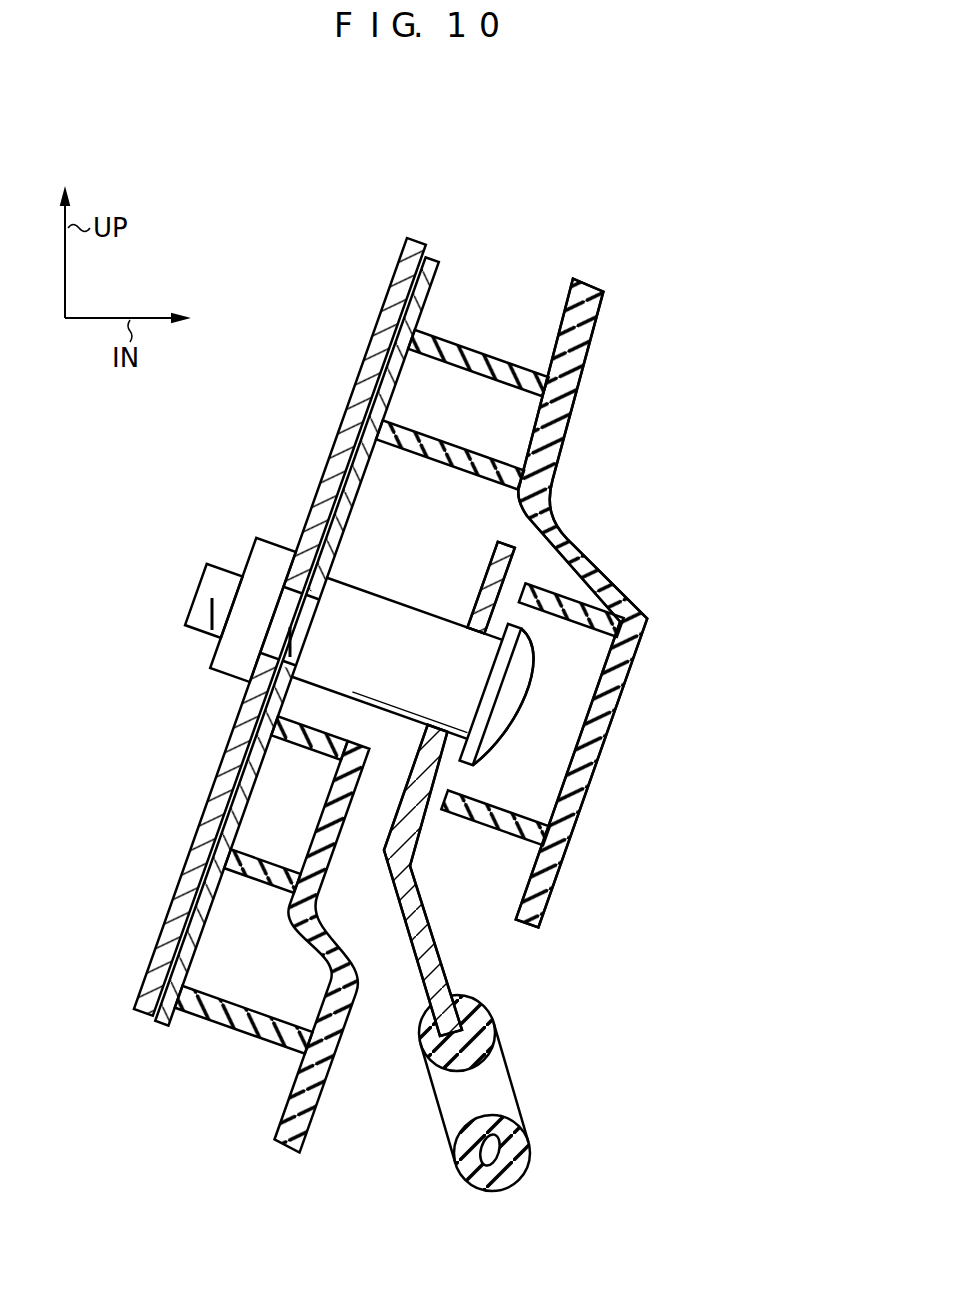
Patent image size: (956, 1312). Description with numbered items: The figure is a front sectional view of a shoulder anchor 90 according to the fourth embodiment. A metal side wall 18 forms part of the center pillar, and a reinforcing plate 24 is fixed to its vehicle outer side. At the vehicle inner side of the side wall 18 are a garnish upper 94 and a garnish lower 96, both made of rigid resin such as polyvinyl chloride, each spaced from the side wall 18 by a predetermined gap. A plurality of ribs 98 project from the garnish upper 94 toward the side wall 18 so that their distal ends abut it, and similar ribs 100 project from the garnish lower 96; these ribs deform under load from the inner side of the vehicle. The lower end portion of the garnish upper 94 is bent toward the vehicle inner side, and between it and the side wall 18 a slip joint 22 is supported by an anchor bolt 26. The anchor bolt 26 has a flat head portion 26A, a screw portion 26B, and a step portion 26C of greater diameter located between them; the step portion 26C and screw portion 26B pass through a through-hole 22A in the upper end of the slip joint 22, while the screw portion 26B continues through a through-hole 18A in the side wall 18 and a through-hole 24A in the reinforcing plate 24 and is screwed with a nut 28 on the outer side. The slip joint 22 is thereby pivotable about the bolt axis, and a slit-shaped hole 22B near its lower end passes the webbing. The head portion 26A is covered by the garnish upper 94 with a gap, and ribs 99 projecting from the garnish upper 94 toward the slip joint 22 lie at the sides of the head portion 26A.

The shoulder anchor 90 is at (615, 240).
The side wall 18 is at (448, 280).
The reinforcing plate 24 is at (383, 316).
The through-hole 18A is at (326, 598).
The through-hole 24A is at (294, 660).
The slip joint 22 is at (432, 937).
The through-hole 22A is at (482, 632).
The slit-shaped hole 22B is at (480, 1103).
The anchor bolt 26 is at (555, 724).
The head portion 26A is at (517, 728).
The screw portion 26B is at (190, 630).
The step portion 26C is at (443, 585).
The nut 28 is at (216, 683).
The garnish upper 94 is at (565, 533).
The garnish lower 96 is at (317, 1107).
The ribs 98 is at (508, 358).
The ribs 99 is at (595, 660).
The ribs 100 is at (310, 750).